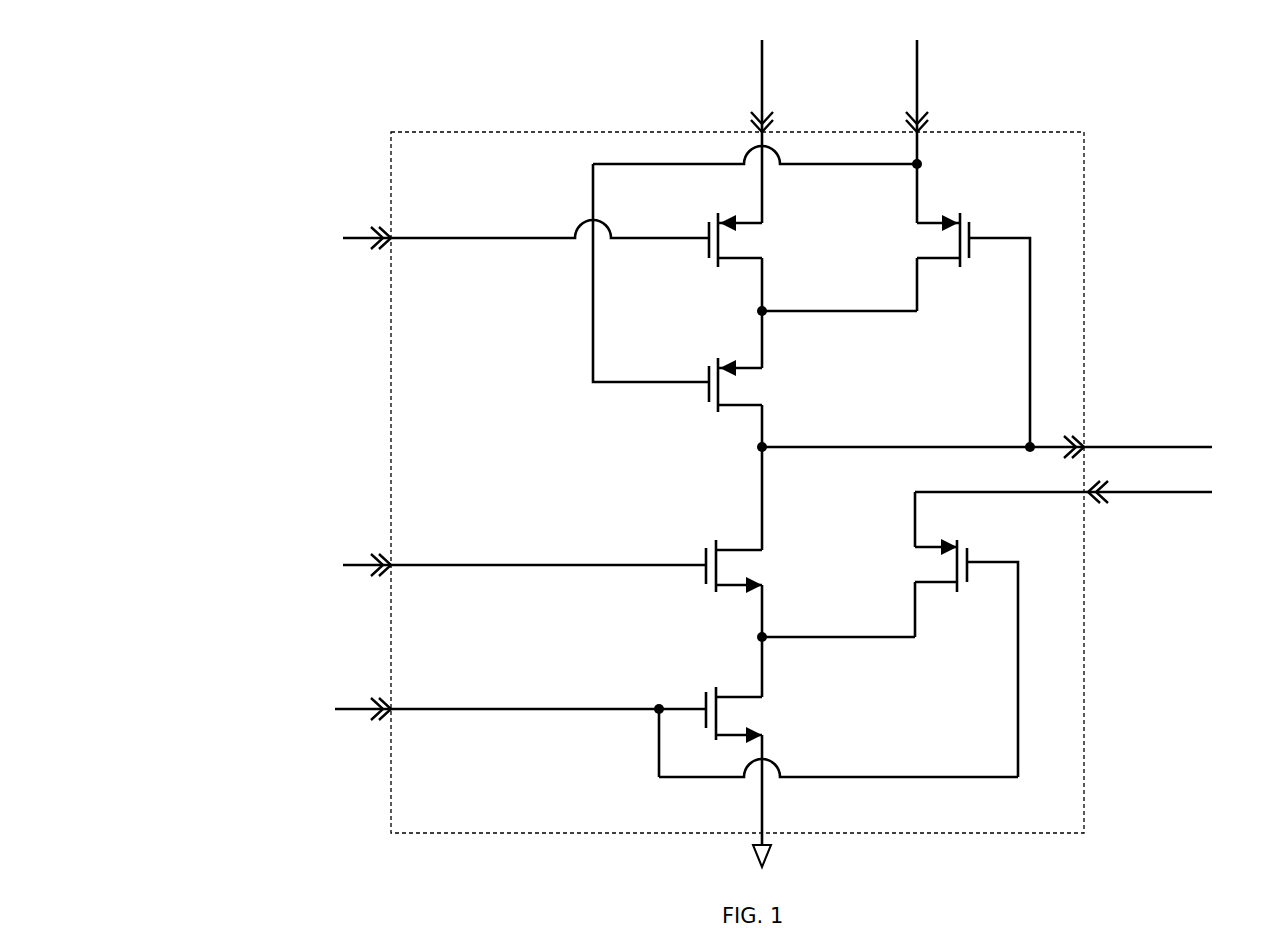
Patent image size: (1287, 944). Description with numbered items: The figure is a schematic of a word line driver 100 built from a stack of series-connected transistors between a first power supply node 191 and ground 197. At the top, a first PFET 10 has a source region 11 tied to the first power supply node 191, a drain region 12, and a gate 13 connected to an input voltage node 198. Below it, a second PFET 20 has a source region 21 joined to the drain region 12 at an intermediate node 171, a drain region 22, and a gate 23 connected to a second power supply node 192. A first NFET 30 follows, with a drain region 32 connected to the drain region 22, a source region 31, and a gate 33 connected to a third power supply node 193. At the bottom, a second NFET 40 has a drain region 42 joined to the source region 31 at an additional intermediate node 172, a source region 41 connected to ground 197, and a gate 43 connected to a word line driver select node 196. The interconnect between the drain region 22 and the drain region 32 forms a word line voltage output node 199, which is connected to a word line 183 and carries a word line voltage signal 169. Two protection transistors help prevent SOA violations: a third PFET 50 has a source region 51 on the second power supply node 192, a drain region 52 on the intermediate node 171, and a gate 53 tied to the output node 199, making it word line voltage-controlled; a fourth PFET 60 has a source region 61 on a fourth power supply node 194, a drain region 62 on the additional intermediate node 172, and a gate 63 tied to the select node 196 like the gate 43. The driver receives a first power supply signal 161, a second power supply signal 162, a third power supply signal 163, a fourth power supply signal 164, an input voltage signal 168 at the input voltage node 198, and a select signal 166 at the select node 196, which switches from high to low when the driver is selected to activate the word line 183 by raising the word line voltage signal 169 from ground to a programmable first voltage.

The word line driver 100 is at (1084, 192).
The first P-type field effect transistor 10 is at (774, 234).
The source region 11 is at (762, 208).
The drain region 12 is at (764, 302).
The gate 13 is at (681, 238).
The second P-type field effect transistor 20 is at (774, 379).
The source region 21 is at (762, 352).
The drain region 22 is at (762, 438).
The gate 23 is at (681, 382).
The first N-type field effect transistor 30 is at (774, 562).
The source region 31 is at (762, 618).
The drain region 32 is at (762, 536).
The gate 33 is at (680, 562).
The second N-type field effect transistor 40 is at (778, 714).
The source region 41 is at (764, 754).
The drain region 42 is at (764, 660).
The gate 43 is at (681, 708).
The third P-type field effect transistor 50 is at (906, 246).
The source region 51 is at (917, 212).
The drain region 52 is at (920, 288).
The gate 53 is at (998, 238).
The fourth P-type field effect transistor 60 is at (900, 572).
The source region 61 is at (918, 510).
The drain region 62 is at (918, 616).
The gate 63 is at (990, 562).
The first power supply signal 161 is at (724, 28).
The second power supply signal 162 is at (934, 22).
The third power supply signal 163 is at (326, 540).
The fourth power supply signal 164 is at (1148, 528).
The word line driver select signal 166 is at (296, 685).
The input voltage signal 168 is at (303, 210).
The word line voltage signal 169 is at (1147, 402).
The intermediate node 171 is at (760, 310).
The additional intermediate node 172 is at (760, 638).
The word line 183 is at (1229, 424).
The first power supply node 191 is at (766, 134).
The second power supply node 192 is at (921, 134).
The third power supply node 193 is at (393, 562).
The fourth power supply node 194 is at (1084, 492).
The word line driver select node 196 is at (393, 706).
The ground 197 is at (766, 857).
The input voltage node 198 is at (393, 235).
The word line voltage output node 199 is at (758, 450).